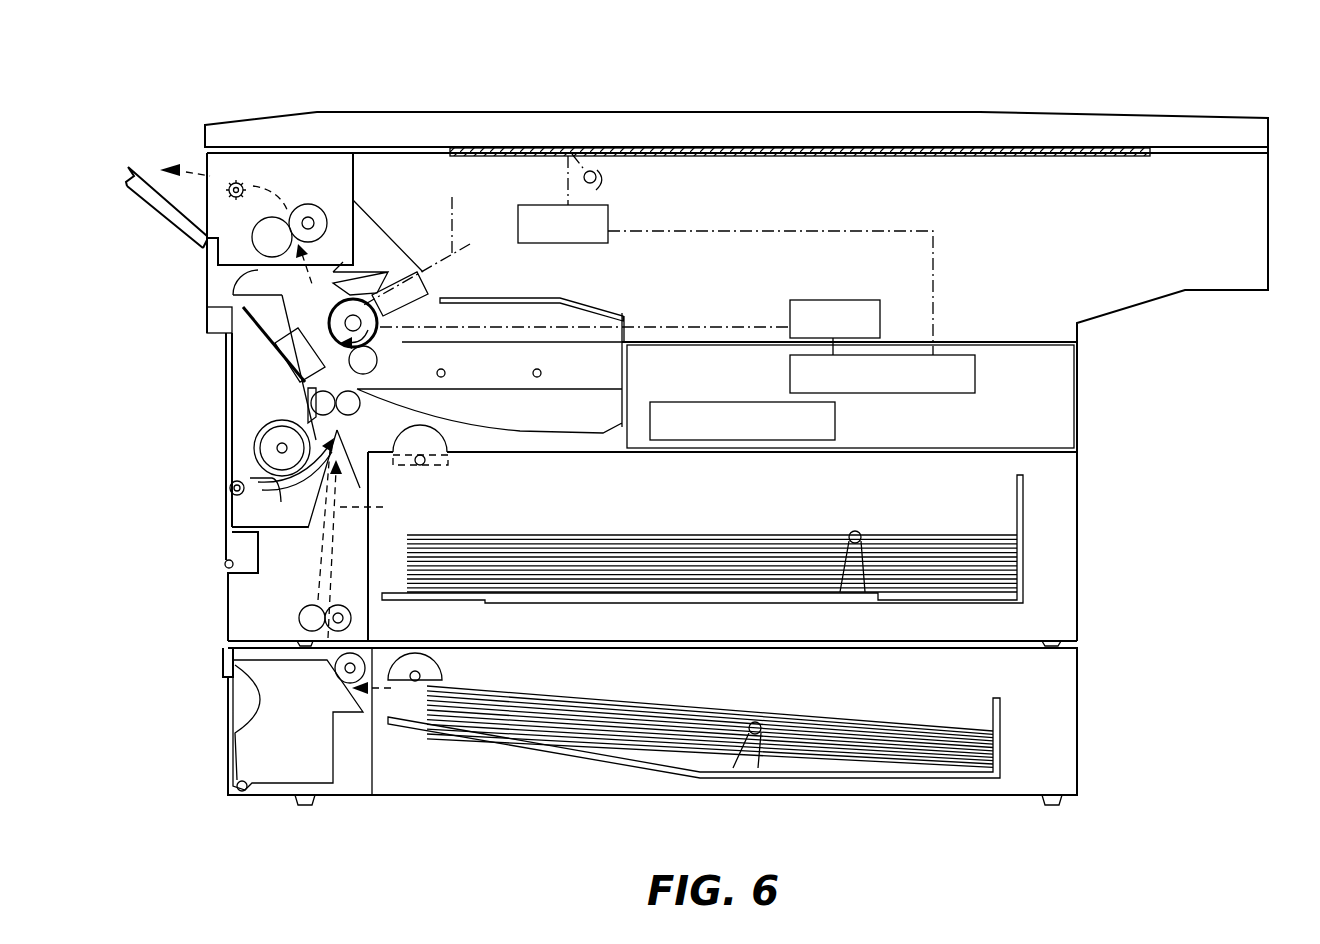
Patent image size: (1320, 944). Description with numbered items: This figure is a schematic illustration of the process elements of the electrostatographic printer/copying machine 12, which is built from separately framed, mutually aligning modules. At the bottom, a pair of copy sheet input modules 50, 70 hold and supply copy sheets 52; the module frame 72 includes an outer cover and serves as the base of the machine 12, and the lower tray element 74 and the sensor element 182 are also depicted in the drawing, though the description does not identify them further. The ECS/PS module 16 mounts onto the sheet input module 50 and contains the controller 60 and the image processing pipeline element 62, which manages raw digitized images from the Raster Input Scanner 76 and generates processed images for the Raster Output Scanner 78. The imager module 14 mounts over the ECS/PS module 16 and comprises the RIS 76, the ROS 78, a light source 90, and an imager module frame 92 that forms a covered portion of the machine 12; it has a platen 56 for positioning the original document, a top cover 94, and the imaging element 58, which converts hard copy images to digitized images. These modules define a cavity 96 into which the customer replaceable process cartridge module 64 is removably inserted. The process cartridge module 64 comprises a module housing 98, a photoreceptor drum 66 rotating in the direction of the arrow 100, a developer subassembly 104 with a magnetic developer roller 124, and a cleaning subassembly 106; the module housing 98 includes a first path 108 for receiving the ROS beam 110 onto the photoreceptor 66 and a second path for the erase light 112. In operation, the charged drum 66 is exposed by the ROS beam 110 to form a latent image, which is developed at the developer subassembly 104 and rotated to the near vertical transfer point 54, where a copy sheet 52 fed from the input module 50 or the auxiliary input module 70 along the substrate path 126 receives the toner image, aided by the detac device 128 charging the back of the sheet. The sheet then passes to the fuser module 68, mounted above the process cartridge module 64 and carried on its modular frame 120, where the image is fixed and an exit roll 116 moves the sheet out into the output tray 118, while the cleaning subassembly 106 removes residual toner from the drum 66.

The electrostatographic printer/copying machine 12 is at (690, 50).
The imager module 14 is at (1109, 225).
The electronic control and power supply (ECS/PS) module 16 is at (1080, 432).
The copy sheet input module 50 is at (1090, 530).
The copy sheets 52 is at (626, 536).
The transfer point 54 is at (325, 313).
The platen 56 is at (882, 158).
The imaging element 58 is at (610, 219).
The controller 60 is at (742, 421).
The image processing pipeline element 62 is at (882, 374).
The process cartridge module 64 is at (521, 288).
The photoreceptor 66 is at (330, 298).
The fuser module 68 is at (183, 152).
The auxiliary copy sheet input module 70 is at (1092, 750).
The module frame 72 is at (1080, 697).
The tray bottom 74 is at (845, 800).
The Raster Input Scanner (RIS) 76 is at (563, 199).
The Raster Output Scanner (ROS) 78 is at (835, 327).
The light source 90 is at (603, 180).
The imager module frame 92 is at (1272, 213).
The top cover 94 is at (848, 110).
The cavity 96 is at (582, 447).
The module housing 98 is at (624, 316).
The arrow 100 is at (380, 340).
The developer subassembly 104 is at (607, 403).
The cleaning subassembly 106 is at (300, 290).
The first path 108 is at (610, 334).
The ROS beam 110 is at (739, 322).
The erase light 112 is at (418, 241).
The exit roll 116 is at (240, 182).
The output tray 118 is at (153, 215).
The modular frame 120 is at (205, 188).
The magnetic developer roller 124 is at (378, 364).
The substrate path 126 is at (340, 538).
The detac device 128 is at (285, 365).
The sensor module 182 is at (428, 290).